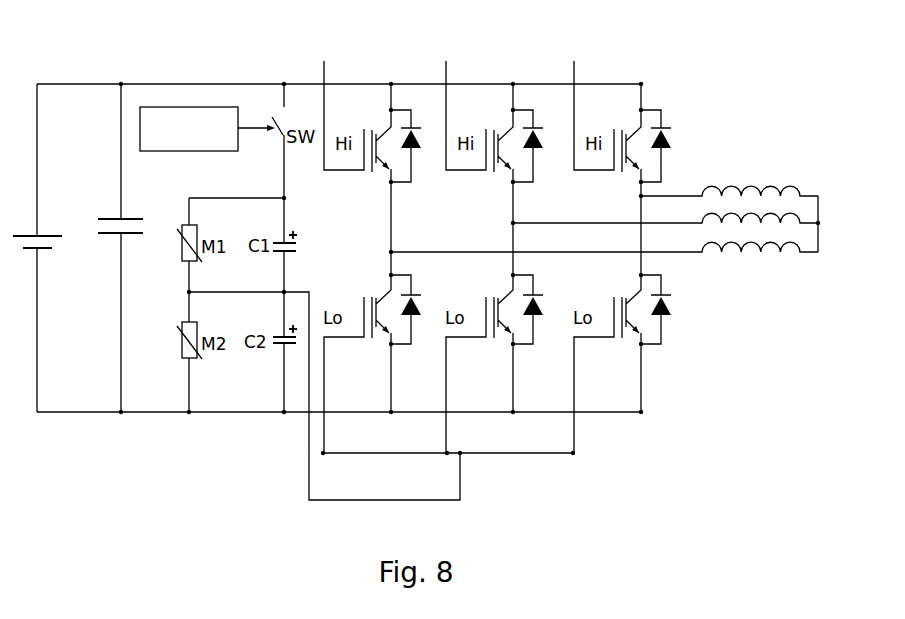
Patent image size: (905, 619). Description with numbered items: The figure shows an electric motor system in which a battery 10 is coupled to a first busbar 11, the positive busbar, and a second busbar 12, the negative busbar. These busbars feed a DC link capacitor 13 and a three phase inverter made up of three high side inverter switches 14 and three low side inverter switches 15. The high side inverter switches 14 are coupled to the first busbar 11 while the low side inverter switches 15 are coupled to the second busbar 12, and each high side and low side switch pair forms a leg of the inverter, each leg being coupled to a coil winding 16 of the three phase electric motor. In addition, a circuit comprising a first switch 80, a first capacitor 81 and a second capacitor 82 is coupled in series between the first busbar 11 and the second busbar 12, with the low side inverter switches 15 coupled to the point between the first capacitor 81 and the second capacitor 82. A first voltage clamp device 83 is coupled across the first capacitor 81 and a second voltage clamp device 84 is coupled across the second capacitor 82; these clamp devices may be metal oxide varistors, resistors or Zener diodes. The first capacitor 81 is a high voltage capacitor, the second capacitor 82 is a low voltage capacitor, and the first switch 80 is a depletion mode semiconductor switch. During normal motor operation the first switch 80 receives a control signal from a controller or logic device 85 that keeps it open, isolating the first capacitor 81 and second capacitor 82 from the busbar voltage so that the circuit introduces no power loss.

The battery 10 is at (50, 234).
The first busbar 11 is at (80, 84).
The second busbar 12 is at (72, 413).
The DC link capacitor 13 is at (108, 235).
The high side inverter switches 14 is at (395, 125).
The low side inverter switches 15 is at (400, 291).
The coil winding 16 is at (808, 195).
The first switch 80 is at (280, 121).
The first capacitor 81 is at (298, 245).
The second capacitor 82 is at (276, 346).
The first voltage clamp device 83 is at (195, 224).
The second voltage clamp device 84 is at (178, 349).
The logic device 85 is at (190, 107).